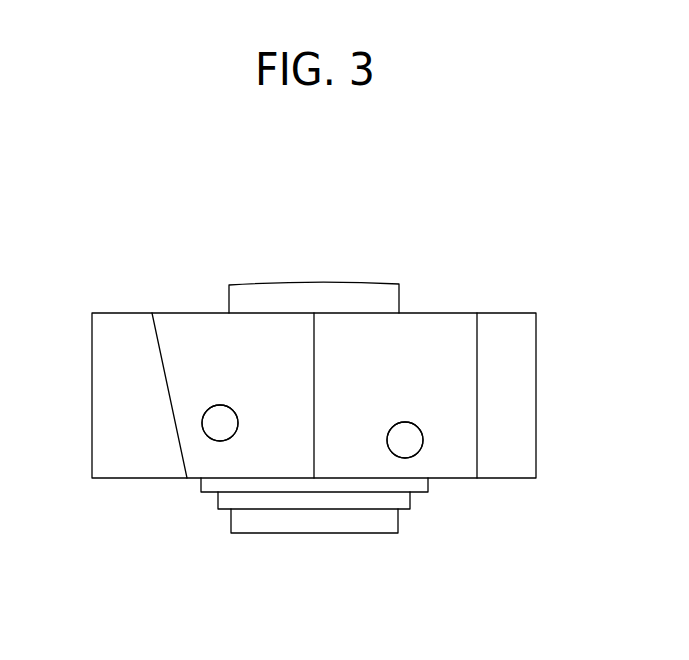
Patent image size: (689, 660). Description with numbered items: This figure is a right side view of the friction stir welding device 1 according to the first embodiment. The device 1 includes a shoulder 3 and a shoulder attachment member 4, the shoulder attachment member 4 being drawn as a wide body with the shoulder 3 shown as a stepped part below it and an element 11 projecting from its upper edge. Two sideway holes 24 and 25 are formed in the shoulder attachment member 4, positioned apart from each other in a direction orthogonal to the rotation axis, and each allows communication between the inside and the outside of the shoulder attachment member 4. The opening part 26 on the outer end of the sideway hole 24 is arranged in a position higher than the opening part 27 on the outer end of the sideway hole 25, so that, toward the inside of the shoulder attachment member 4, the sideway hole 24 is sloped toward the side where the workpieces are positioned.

The friction stir welding device 1 is at (541, 189).
The shoulder 3 is at (253, 520).
The shoulder attachment member 4 is at (108, 425).
The projection 11 is at (273, 296).
The sideway hole 24 is at (220, 415).
The sideway hole 25 is at (402, 435).
The opening part 26 is at (206, 428).
The opening part 27 is at (418, 436).